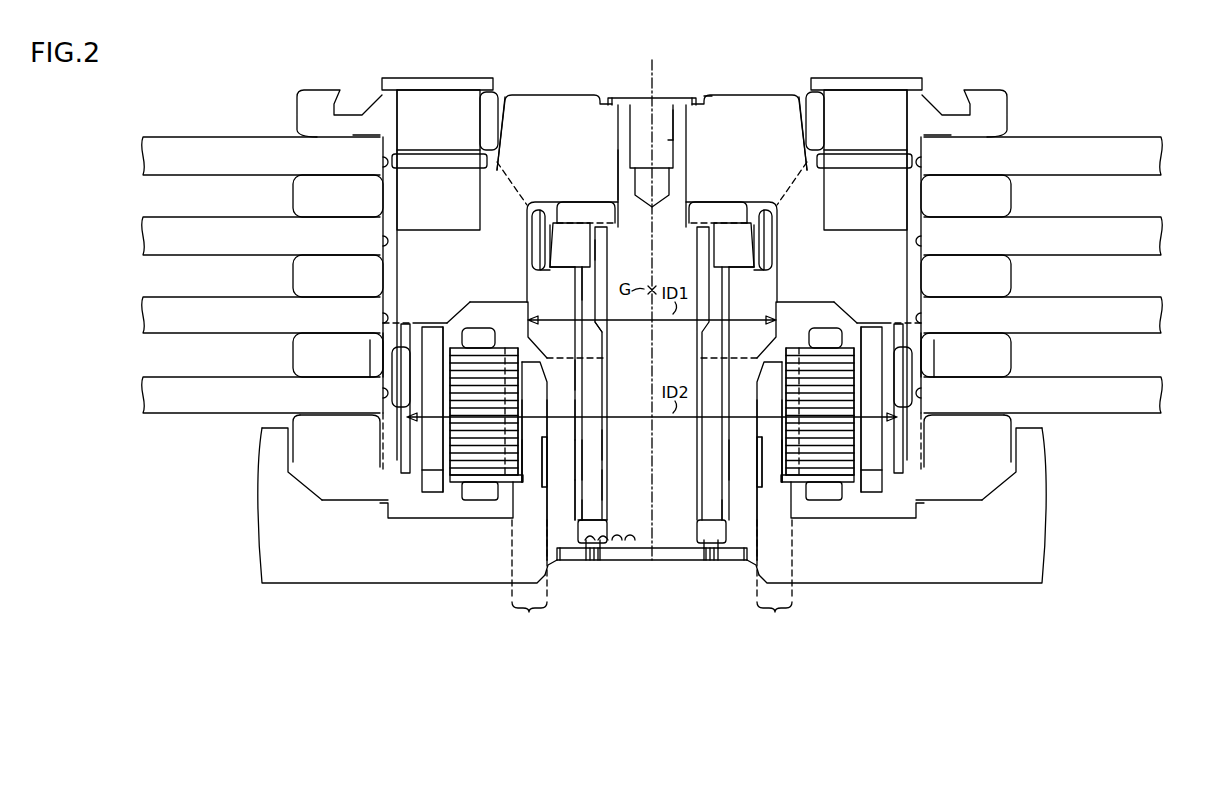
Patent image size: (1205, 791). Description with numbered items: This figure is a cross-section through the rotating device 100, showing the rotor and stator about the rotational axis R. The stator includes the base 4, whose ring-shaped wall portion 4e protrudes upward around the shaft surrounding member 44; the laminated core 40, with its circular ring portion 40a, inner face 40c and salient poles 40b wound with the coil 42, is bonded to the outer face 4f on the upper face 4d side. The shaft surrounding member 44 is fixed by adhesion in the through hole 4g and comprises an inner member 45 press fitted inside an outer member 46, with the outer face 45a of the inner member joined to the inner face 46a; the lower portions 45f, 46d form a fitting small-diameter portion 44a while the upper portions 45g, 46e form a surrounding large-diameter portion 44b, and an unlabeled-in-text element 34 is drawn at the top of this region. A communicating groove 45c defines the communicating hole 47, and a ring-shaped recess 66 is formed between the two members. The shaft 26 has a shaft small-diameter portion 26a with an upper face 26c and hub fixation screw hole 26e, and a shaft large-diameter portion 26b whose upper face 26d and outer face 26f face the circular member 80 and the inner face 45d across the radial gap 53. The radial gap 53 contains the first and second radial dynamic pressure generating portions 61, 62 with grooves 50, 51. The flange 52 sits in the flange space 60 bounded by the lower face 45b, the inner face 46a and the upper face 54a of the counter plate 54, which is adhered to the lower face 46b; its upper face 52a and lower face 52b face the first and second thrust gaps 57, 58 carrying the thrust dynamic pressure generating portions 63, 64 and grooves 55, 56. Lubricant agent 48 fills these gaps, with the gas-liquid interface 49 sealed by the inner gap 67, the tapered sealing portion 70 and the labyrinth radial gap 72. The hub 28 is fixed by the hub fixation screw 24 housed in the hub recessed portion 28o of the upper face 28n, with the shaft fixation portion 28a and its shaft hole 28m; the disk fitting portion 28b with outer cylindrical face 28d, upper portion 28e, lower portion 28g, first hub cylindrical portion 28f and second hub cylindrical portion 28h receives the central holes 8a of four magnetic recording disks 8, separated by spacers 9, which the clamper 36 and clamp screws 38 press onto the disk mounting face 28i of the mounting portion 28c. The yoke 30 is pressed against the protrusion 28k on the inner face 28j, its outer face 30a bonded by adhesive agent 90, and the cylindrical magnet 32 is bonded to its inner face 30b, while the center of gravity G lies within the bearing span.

The base 4 is at (1009, 589).
The upper face of the base 4d is at (442, 516).
The ring-shaped wall portion 4e is at (652, 572).
The outer face of the ring-shaped wall portion 4f is at (652, 500).
The through hole 4g is at (550, 563).
The magnetic recording disk 8 is at (156, 149).
The central hole of the magnetic recording disk 8a is at (386, 163).
The spacer 9 is at (300, 195).
The hub fixation screw 24 is at (668, 102).
The shaft 26 is at (684, 172).
The shaft small-diameter portion 26a is at (626, 160).
The shaft large-diameter portion 26b is at (620, 172).
The upper face of the shaft small-diameter portion 26c is at (679, 114).
The upper face of the shaft large-diameter portion 26d is at (670, 196).
The hub fixation screw hole 26e is at (676, 138).
The outer face of the shaft large-diameter portion 26f is at (602, 452).
The hub 28 is at (740, 95).
The shaft fixation portion 28a is at (537, 106).
The disk fitting portion 28b is at (504, 118).
The mounting portion 28c is at (292, 441).
The outer cylindrical face 28d is at (380, 200).
The upper portion of the outer cylindrical face 28e is at (380, 192).
The first hub cylindrical portion 28f is at (510, 186).
The lower portion of the outer cylindrical face 28g is at (380, 351).
The second hub cylindrical portion 28h is at (383, 490).
The disk mounting face 28i is at (296, 419).
The inner face of the second hub cylindrical portion 28j is at (397, 427).
The protrusion 28k is at (384, 366).
The shaft hole 28m is at (621, 126).
The upper face of the shaft fixation portion 28n is at (716, 102).
The hub recessed portion 28o is at (697, 104).
The yoke 30 is at (422, 490).
The outer face of the yoke 30a is at (384, 407).
The inner face of the yoke 30b is at (427, 492).
The cylindrical magnet 32 is at (433, 498).
The frame 34 is at (498, 209).
The clamper 36 is at (416, 106).
The clamp screw 38 is at (466, 94).
The laminated core 40 is at (370, 645).
The circular ring portion 40a is at (482, 388).
The salient pole 40b is at (458, 432).
The inner face of the circular ring portion 40c is at (774, 494).
The coil 42 is at (474, 344).
The shaft surrounding member 44 is at (528, 645).
The fitting small-diameter portion 44a is at (428, 697).
The surrounding large-diameter portion 44b is at (472, 302).
The inner member 45 is at (528, 402).
The outer face of the inner member 45a is at (570, 434).
The lower face of the inner member 45b is at (586, 484).
The communicating groove 45c is at (574, 381).
The inner face of the inner member 45d is at (628, 352).
The lower portion of the inner member 45f is at (536, 452).
The upper portion of the inner member 45g is at (571, 282).
The outer member 46 is at (545, 442).
The inner face of the outer member 46a is at (582, 463).
The lower face of the outer member 46b is at (568, 482).
The lower portion of the outer member 46d is at (500, 432).
The upper portion of the outer member 46e is at (577, 294).
The communicating hole 47 is at (582, 489).
The lubricant agent 48 is at (550, 262).
The gas-liquid interface 49 is at (553, 220).
The first radial dynamic pressure generating groove 50 is at (600, 268).
The second radial dynamic pressure generating groove 51 is at (601, 481).
The flange 52 is at (604, 562).
The upper face of the flange 52a is at (593, 562).
The lower face of the flange 52b is at (596, 562).
The radial gap 53 is at (606, 332).
The counter plate 54 is at (665, 560).
The upper face of the counter plate 54a is at (628, 560).
The first thrust dynamic pressure generating groove 55 is at (606, 515).
The second thrust dynamic pressure generating groove 56 is at (598, 562).
The first thrust gap 57 is at (652, 544).
The second thrust gap 58 is at (600, 562).
The flange space 60 is at (606, 531).
The first radial dynamic pressure generating portion 61 is at (608, 237).
The second radial dynamic pressure generating portion 62 is at (606, 498).
The first thrust dynamic pressure generating portion 63 is at (590, 562).
The second thrust dynamic pressure generating portion 64 is at (652, 544).
The recess 66 is at (568, 268).
The inner gap 67 is at (596, 251).
The tapered sealing portion 70 is at (545, 245).
The radial gap between the surrounding large-diameter portion and the first hub cyli 72 is at (535, 232).
The circular member 80 is at (578, 212).
The adhesive agent 90 is at (407, 325).
The rotating device 100 is at (636, 766).